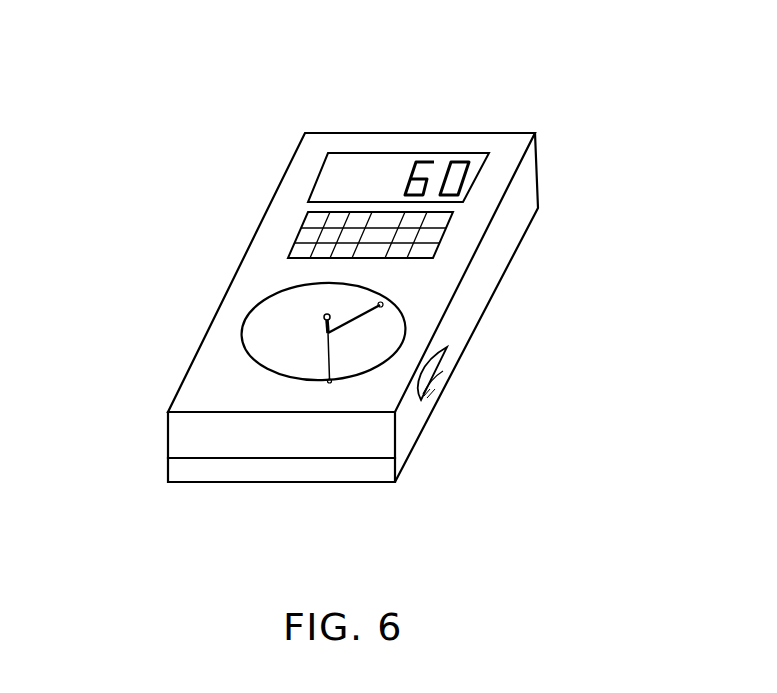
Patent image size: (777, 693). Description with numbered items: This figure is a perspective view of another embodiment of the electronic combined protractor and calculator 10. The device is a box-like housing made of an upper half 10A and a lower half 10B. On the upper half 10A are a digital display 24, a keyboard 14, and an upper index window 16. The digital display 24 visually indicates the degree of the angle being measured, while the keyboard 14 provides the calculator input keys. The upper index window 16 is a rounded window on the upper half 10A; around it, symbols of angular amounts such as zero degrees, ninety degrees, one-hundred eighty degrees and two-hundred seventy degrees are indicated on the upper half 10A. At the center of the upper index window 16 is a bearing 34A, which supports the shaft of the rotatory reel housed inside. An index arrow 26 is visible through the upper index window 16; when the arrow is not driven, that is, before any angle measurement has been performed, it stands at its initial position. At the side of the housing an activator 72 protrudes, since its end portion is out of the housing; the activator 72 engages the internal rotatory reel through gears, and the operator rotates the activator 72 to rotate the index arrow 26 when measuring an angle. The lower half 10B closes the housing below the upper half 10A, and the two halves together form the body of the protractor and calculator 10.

The electronic combined protractor and calculator 10 is at (345, 318).
The upper half 10A is at (182, 437).
The lower half 10B is at (187, 468).
The keyboard 14 is at (303, 228).
The upper index window 16 is at (277, 343).
The digital display 24 is at (395, 167).
The index arrow 26 is at (357, 316).
The bearing 34A is at (325, 315).
The activator 72 is at (447, 368).